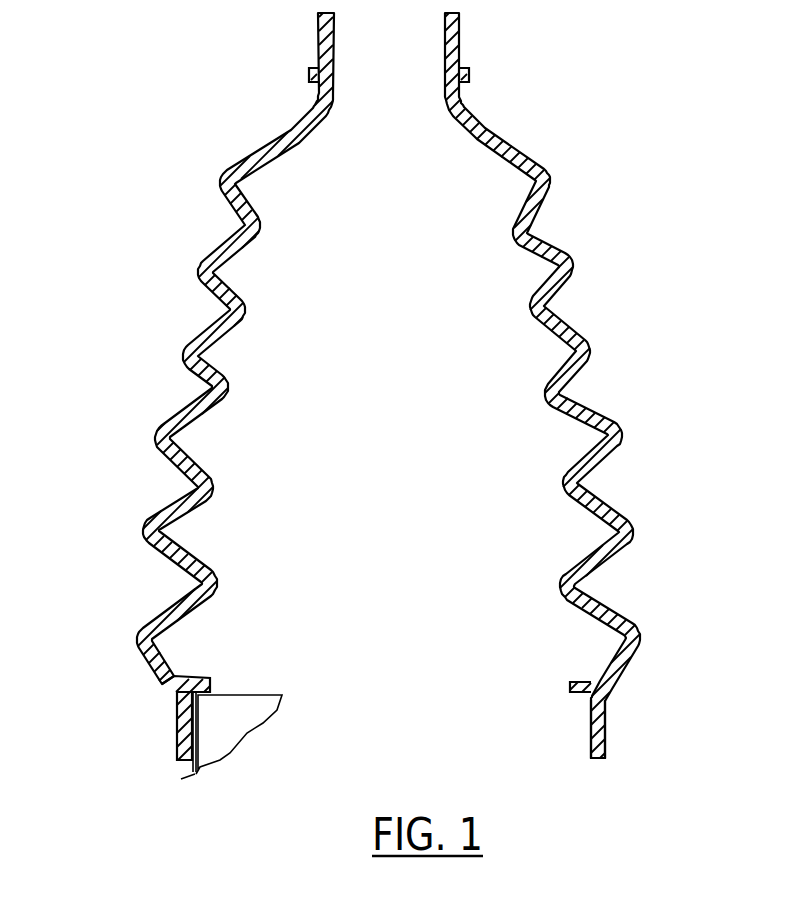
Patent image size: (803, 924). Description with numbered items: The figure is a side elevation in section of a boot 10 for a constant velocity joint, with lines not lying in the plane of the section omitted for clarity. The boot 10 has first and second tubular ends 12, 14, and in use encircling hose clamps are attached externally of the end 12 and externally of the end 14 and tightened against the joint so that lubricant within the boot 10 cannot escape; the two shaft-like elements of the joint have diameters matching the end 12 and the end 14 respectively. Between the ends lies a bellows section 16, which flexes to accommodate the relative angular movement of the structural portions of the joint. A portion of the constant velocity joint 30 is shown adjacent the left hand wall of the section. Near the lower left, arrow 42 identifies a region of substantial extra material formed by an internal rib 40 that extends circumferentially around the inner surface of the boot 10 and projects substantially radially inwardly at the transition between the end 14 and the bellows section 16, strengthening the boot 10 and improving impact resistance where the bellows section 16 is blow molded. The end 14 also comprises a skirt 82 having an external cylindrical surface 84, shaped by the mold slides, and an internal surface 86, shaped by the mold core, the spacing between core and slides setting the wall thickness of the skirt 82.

The boot 10 is at (606, 168).
The first tubular end 12 is at (453, 43).
The second tubular end 14 is at (607, 742).
The bellows section 16 is at (200, 335).
The constant velocity joint 30 is at (266, 694).
The internal rib 40 is at (210, 679).
The arrow 42 is at (187, 359).
The skirt 82 is at (192, 774).
The external cylindrical surface 84 is at (178, 724).
The internal surface 86 is at (591, 718).